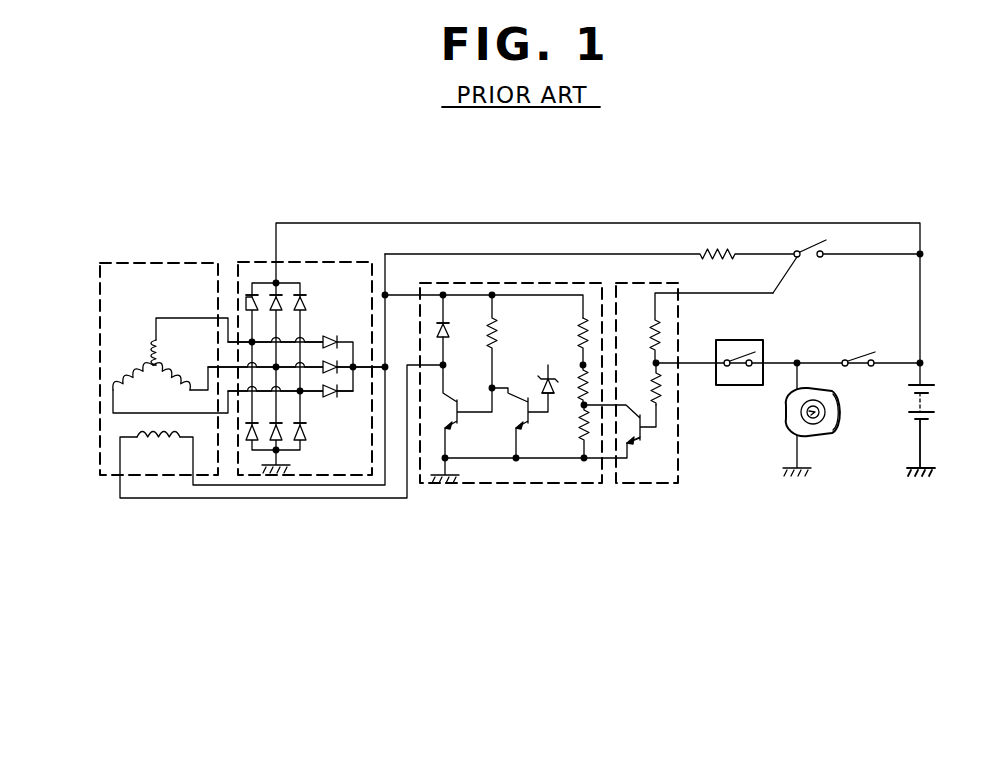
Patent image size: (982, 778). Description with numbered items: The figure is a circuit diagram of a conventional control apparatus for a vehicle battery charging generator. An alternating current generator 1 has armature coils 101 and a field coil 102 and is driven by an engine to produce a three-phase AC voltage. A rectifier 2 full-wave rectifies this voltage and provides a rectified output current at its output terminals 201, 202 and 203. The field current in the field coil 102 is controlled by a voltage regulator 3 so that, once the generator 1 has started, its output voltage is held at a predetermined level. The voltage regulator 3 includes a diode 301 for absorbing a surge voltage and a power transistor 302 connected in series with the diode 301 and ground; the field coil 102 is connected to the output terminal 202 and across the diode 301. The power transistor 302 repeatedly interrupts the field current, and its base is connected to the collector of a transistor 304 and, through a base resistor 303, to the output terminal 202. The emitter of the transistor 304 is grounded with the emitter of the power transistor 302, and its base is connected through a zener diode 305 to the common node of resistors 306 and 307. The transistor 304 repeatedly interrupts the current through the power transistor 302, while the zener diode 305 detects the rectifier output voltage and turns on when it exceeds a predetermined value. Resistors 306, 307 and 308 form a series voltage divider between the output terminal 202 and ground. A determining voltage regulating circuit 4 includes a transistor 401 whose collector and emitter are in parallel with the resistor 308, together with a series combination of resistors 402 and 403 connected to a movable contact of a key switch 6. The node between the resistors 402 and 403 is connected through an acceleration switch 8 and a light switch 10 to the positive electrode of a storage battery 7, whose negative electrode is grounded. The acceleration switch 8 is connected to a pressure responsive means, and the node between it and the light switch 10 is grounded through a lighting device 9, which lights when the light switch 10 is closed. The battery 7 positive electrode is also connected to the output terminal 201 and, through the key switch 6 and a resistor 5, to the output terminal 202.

The alternating current generator 1 is at (169, 263).
The armature coils 101 is at (131, 360).
The field coil 102 is at (147, 442).
The rectifier 2 is at (242, 262).
The output terminal 201 is at (276, 283).
The output terminal 202 is at (358, 364).
The output terminal 203 is at (278, 452).
The voltage regulator 3 is at (456, 484).
The diode 301 is at (461, 327).
The power transistor 302 is at (449, 423).
The base resistor 303 is at (492, 323).
The transistor 304 is at (516, 430).
The zener diode 305 is at (543, 385).
The resistor 306 is at (583, 329).
The resistor 307 is at (583, 393).
The resistor 308 is at (584, 444).
The determining voltage regulating circuit 4 is at (653, 484).
The transistor 401 is at (632, 443).
The resistor 402 is at (660, 323).
The resistor 403 is at (660, 393).
The resistor 5 is at (706, 253).
The key switch 6 is at (810, 258).
The storage battery 7 is at (934, 389).
The acceleration switch 8 is at (750, 341).
The lighting device 9 is at (833, 424).
The light switch 10 is at (862, 358).